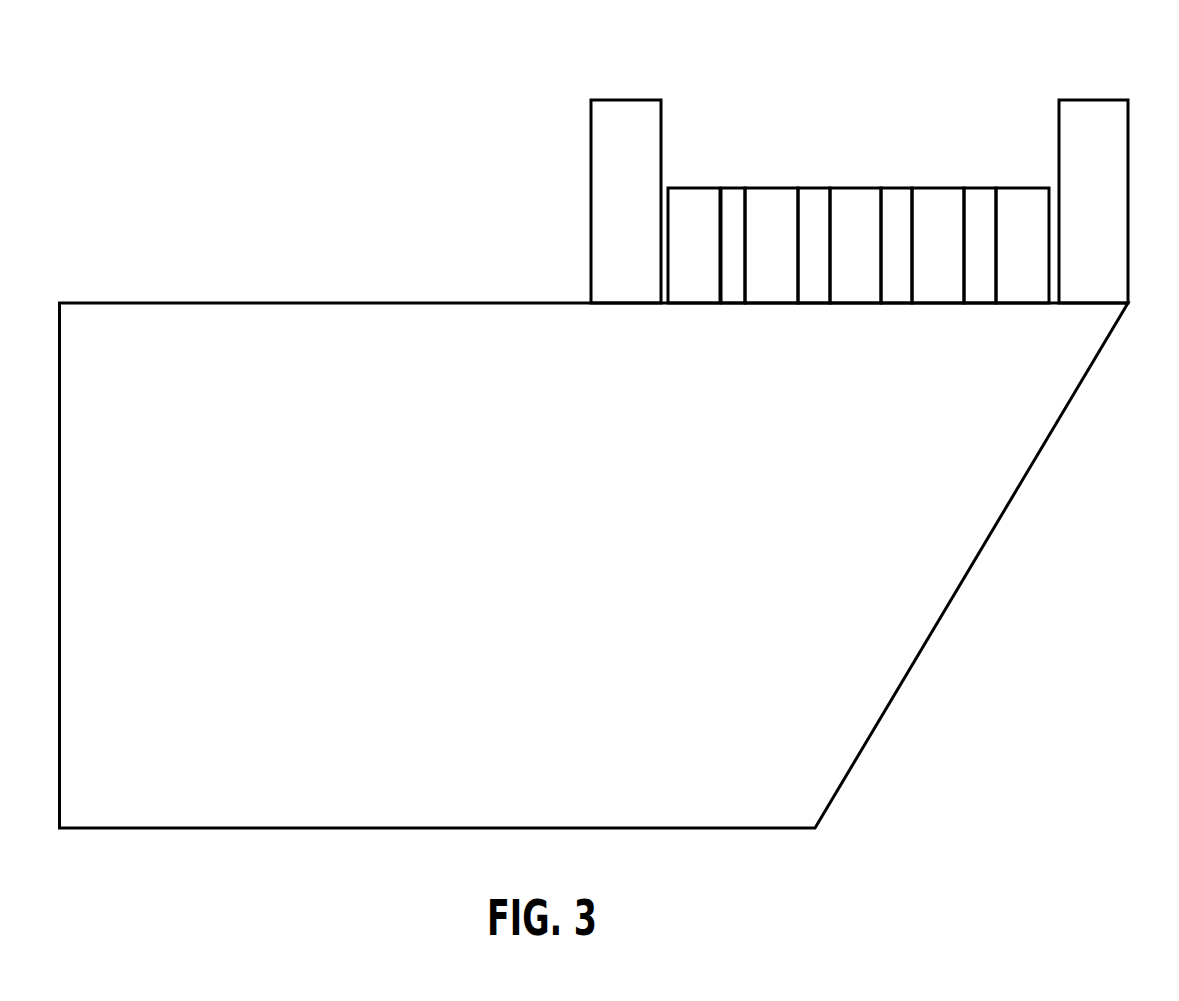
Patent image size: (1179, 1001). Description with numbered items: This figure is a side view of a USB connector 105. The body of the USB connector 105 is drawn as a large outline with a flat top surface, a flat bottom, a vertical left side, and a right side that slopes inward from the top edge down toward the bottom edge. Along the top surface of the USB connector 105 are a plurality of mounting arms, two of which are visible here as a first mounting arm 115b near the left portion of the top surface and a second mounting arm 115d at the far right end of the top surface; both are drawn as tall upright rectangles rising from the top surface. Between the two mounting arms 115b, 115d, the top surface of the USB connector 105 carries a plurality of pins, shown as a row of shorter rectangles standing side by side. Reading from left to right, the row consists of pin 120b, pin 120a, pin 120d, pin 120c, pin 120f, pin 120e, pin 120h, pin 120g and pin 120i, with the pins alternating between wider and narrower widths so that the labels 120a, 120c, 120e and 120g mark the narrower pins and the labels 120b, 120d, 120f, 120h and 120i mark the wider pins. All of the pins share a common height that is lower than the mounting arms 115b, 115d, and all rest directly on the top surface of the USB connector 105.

The USB connector 105 is at (738, 829).
The mounting arm 115b is at (612, 98).
The mounting arm 115d is at (1091, 98).
The pin 120a is at (731, 187).
The pin 120b is at (690, 187).
The pin 120c is at (812, 187).
The pin 120d is at (769, 187).
The pin 120e is at (895, 187).
The pin 120f is at (855, 187).
The pin 120g is at (977, 187).
The pin 120h is at (937, 187).
The pin 120i is at (1017, 187).